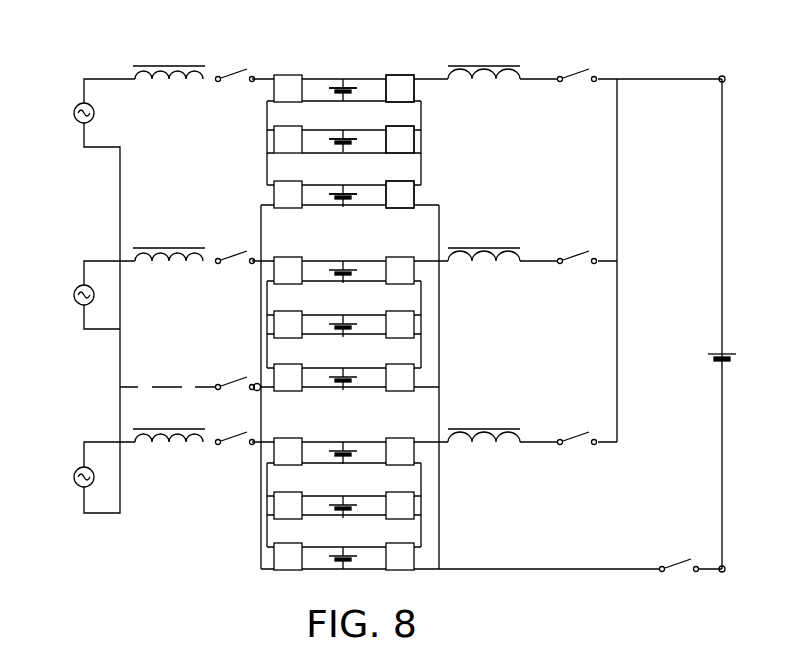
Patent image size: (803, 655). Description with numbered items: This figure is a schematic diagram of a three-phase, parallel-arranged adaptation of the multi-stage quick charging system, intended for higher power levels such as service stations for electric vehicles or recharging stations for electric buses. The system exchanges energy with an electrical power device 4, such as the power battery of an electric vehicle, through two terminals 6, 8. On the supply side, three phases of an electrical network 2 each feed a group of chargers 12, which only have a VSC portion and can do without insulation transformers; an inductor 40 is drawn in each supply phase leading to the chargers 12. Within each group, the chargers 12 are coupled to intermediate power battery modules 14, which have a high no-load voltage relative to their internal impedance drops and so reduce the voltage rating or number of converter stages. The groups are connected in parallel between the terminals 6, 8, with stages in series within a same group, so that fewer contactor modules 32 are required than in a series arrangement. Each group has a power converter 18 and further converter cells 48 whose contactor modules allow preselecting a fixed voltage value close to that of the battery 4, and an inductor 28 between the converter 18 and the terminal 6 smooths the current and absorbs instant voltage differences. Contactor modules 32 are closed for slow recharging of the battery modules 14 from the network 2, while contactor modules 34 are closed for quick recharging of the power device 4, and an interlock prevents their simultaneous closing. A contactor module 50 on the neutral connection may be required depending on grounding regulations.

The electrical network 2 is at (72, 127).
The electrical power device 4 is at (731, 352).
The terminal 6 is at (726, 76).
The terminal 8 is at (726, 572).
The chargers 12 is at (270, 192).
The intermediate power battery module 14 is at (337, 190).
The power converter 18 is at (400, 78).
The inductor 28 is at (488, 65).
The contactor modules 32 is at (247, 72).
The contactor modules 34 is at (578, 253).
The input inductors 40 is at (168, 65).
The contactor modules 48 is at (414, 190).
The contactor module 50 is at (225, 368).